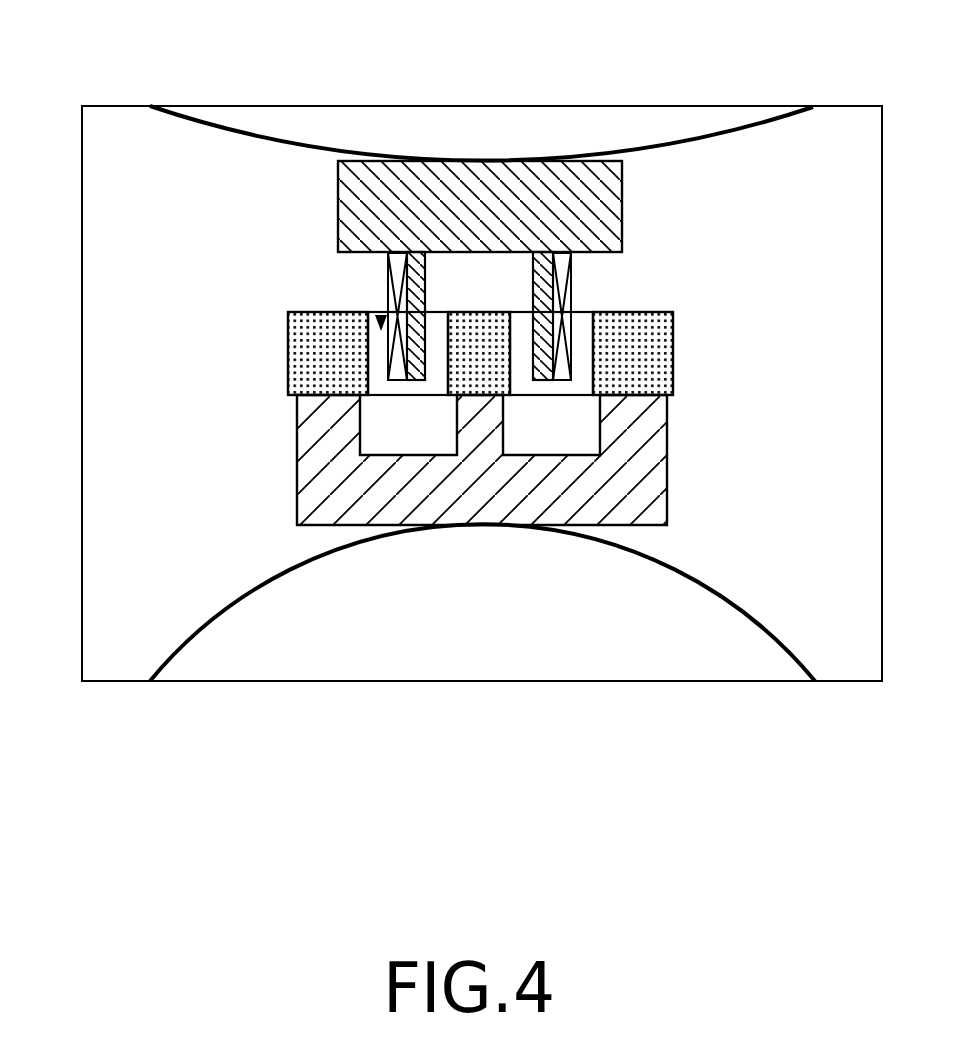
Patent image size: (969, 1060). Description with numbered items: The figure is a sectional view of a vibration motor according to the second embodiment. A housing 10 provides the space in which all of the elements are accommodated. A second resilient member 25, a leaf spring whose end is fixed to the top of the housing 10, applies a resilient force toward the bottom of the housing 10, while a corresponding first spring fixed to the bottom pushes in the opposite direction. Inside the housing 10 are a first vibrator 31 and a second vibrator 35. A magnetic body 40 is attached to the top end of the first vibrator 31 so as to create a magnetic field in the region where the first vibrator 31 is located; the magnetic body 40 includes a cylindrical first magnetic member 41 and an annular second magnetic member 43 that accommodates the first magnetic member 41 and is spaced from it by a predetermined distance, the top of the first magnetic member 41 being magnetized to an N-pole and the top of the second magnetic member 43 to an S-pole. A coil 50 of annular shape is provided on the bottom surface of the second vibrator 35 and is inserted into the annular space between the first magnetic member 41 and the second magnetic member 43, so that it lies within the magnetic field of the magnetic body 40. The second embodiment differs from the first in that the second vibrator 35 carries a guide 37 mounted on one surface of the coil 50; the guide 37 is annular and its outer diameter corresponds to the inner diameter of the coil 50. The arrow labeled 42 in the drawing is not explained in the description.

The housing 10 is at (82, 395).
The second resilient member 25 is at (712, 140).
The first vibrator 31 is at (297, 470).
The second vibrator 35 is at (338, 206).
The guide 37 is at (426, 276).
The magnetic body 40 is at (391, 374).
The first magnetic member 41 is at (453, 392).
The gap / insertion direction 42 is at (381, 318).
The second magnetic member 43 is at (288, 338).
The coil 50 is at (571, 279).